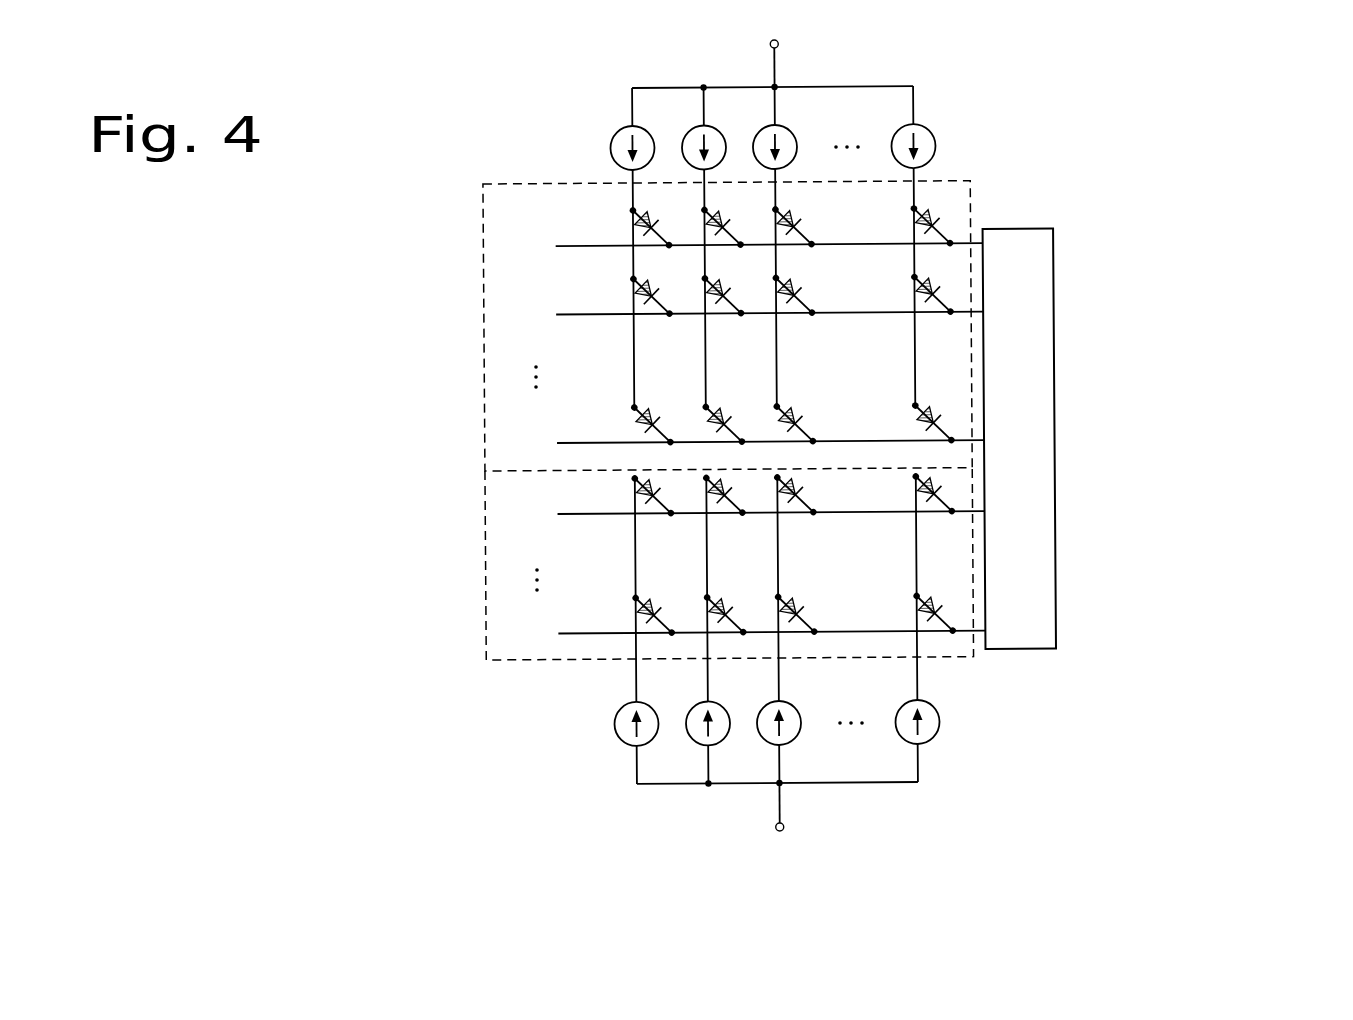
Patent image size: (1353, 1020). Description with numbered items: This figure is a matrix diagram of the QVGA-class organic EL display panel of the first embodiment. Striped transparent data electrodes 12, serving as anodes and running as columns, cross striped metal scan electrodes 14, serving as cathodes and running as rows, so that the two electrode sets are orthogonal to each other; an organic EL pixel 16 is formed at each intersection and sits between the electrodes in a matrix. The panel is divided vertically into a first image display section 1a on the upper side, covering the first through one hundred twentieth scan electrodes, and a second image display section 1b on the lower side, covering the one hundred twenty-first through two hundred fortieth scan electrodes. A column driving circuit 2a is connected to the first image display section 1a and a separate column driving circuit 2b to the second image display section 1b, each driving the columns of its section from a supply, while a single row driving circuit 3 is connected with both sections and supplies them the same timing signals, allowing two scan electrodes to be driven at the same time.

The column driving circuit 2a is at (928, 120).
The column driving circuit 2b is at (617, 755).
The row driving circuit 3 is at (1026, 652).
The data electrode 12 is at (640, 435).
The scan electrode 14 is at (624, 437).
The organic EL pixel 16 is at (940, 215).
The first image display section 1a is at (482, 351).
The second image display section 1b is at (482, 558).